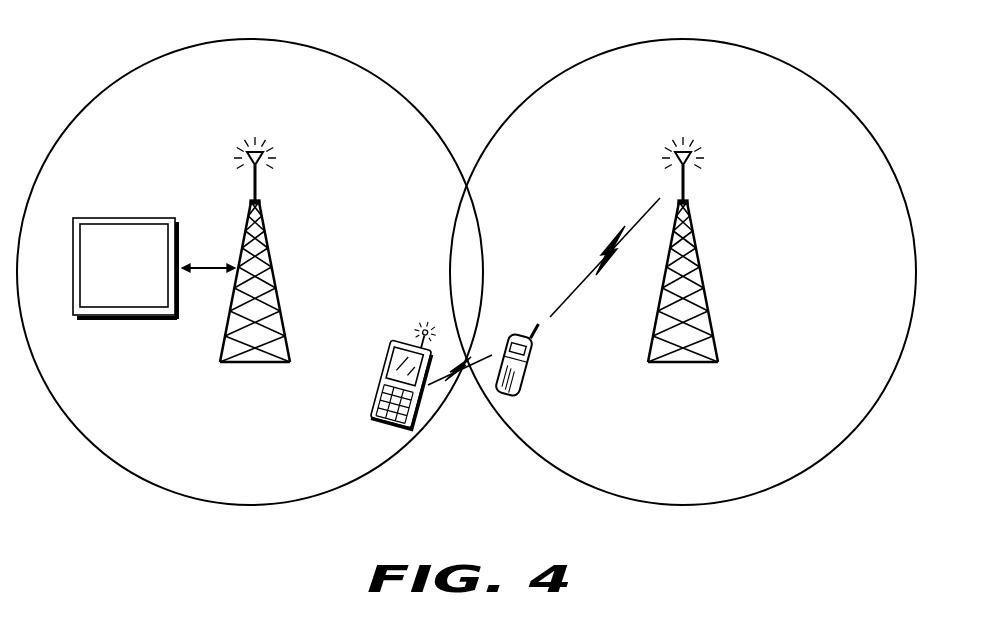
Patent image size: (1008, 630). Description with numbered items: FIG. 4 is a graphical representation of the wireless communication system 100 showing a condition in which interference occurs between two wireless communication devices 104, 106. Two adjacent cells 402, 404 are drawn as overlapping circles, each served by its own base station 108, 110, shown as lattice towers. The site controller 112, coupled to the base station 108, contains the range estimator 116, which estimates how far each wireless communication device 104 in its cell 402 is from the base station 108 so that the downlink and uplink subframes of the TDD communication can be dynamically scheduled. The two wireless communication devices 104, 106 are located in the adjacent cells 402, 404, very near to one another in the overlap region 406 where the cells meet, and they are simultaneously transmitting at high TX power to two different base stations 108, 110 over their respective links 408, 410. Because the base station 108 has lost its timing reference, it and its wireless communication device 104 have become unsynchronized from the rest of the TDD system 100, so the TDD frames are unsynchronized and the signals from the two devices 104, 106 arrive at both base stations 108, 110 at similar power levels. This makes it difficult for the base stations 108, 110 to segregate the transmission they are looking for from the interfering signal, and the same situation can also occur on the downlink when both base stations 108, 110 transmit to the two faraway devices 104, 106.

The wireless communication system 100 is at (481, 28).
The wireless communication device 104 is at (385, 350).
The wireless communication device 106 is at (530, 377).
The base station 108 is at (267, 250).
The base station 110 is at (697, 357).
The site controller 112 is at (172, 216).
The range estimator 116 is at (122, 300).
The cell 402 is at (247, 507).
The cell 404 is at (681, 507).
The overlap region 406 is at (483, 250).
The communication link to first base station 408 is at (450, 382).
The communication link to second base station 410 is at (605, 248).